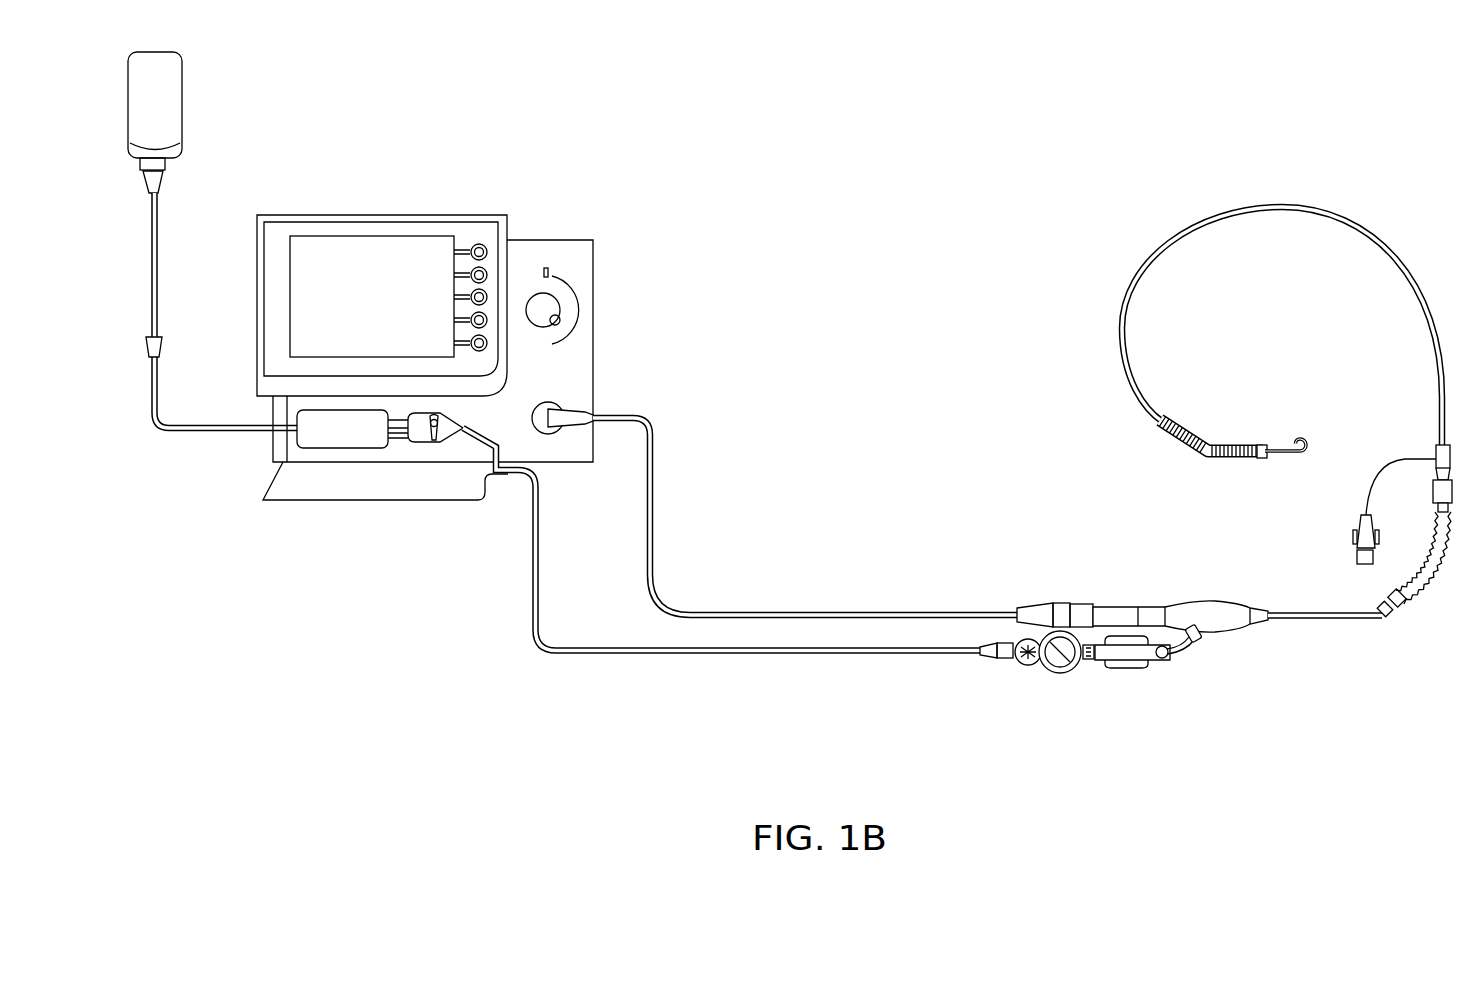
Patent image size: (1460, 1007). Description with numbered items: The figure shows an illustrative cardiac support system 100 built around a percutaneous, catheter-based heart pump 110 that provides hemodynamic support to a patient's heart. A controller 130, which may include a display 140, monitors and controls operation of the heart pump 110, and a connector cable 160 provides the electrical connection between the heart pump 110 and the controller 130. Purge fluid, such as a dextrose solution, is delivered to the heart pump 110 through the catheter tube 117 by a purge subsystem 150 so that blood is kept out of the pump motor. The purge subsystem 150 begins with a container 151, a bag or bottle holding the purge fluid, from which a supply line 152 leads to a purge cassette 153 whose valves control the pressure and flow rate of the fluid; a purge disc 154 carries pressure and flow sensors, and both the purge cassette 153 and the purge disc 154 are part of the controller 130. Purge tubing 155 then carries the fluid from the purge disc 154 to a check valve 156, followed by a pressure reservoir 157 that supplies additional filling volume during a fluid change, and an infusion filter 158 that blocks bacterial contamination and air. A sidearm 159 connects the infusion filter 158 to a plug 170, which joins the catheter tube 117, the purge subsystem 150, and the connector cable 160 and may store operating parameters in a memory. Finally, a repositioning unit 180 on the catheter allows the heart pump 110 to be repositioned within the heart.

The cardiac support system 100 is at (818, 150).
The heart pump 110 is at (1212, 447).
The catheter tube 117 is at (1128, 285).
The controller 130 is at (585, 262).
The display 140 is at (400, 252).
The purge subsystem 150 is at (533, 595).
The container 151 is at (172, 95).
The supply line 152 is at (152, 308).
The purge cassette 153 is at (337, 440).
The purge disc 154 is at (432, 442).
The purge tubing 155 is at (588, 654).
The check valve 156 is at (1007, 657).
The pressure reservoir 157 is at (1060, 672).
The infusion filter 158 is at (1133, 668).
The sidearm 159 is at (1188, 656).
The connector cable 160 is at (890, 612).
The plug 170 is at (1212, 607).
The repositioning unit 180 is at (1437, 495).